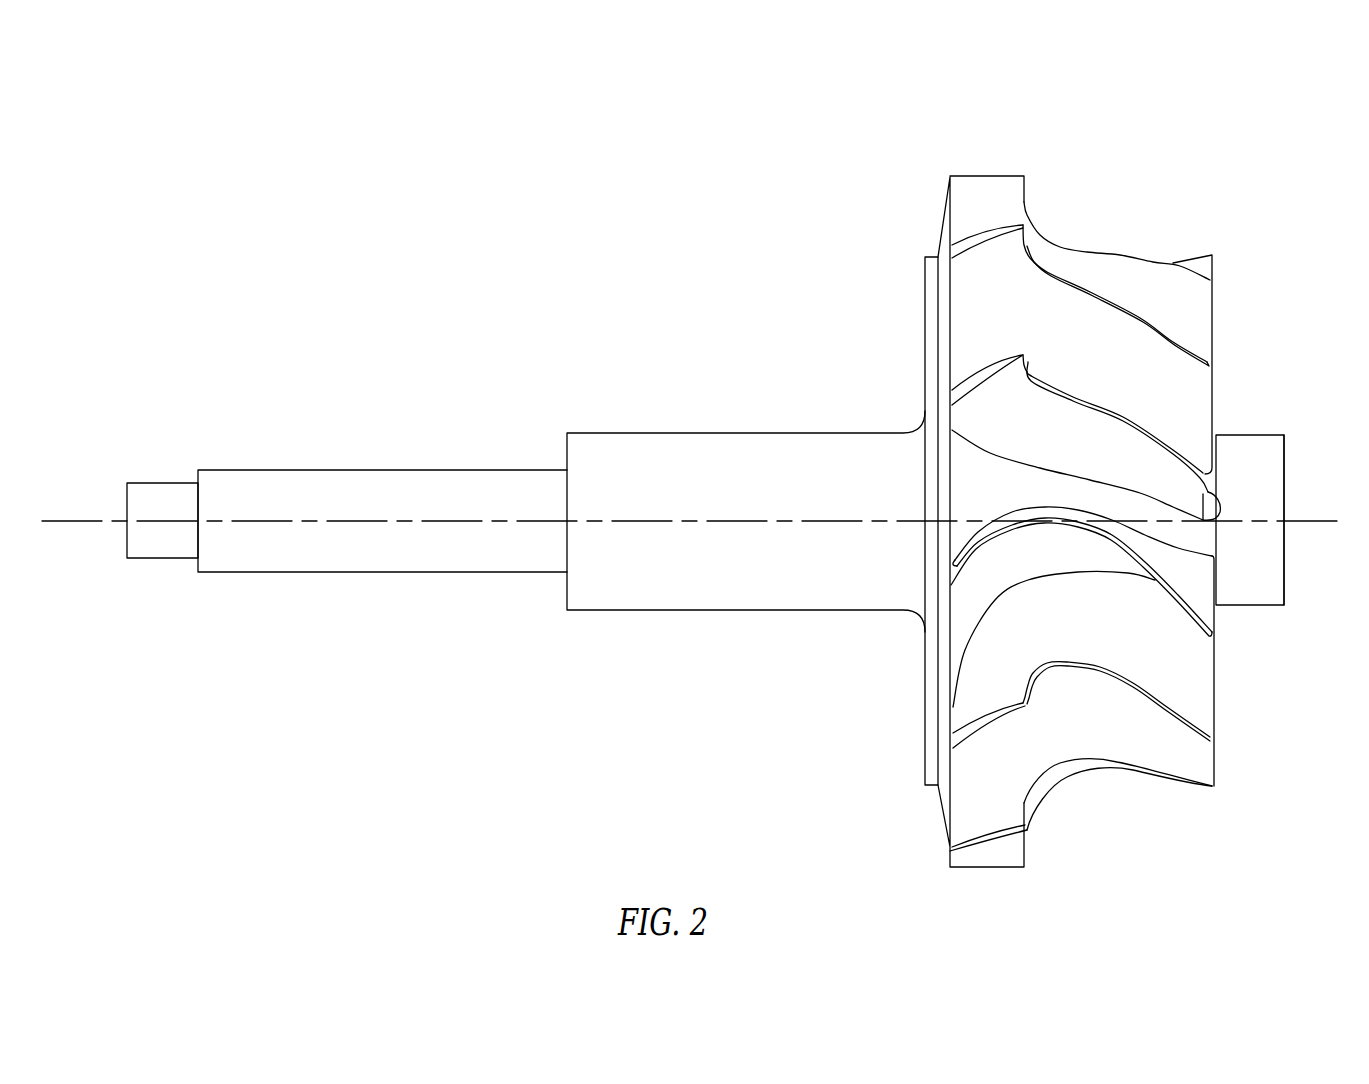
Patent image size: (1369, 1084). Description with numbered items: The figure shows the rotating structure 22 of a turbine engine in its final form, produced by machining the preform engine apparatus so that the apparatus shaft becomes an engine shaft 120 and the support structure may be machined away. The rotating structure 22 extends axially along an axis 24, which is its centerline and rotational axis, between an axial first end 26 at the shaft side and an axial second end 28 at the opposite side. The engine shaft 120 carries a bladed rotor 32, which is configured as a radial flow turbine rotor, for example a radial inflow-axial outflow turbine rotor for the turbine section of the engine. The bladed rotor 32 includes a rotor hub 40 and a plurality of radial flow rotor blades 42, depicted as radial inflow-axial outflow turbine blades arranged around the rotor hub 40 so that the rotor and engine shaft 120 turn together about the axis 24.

The rotating structure 22 is at (1182, 127).
The axis 24 is at (1328, 518).
The axial first end 26 is at (127, 541).
The axial second end 28 is at (1284, 575).
The bladed rotor 32 is at (1082, 230).
The rotor hub 40 is at (1250, 430).
The radial flow rotor blades 42 is at (1110, 282).
The engine shaft 120 is at (563, 415).